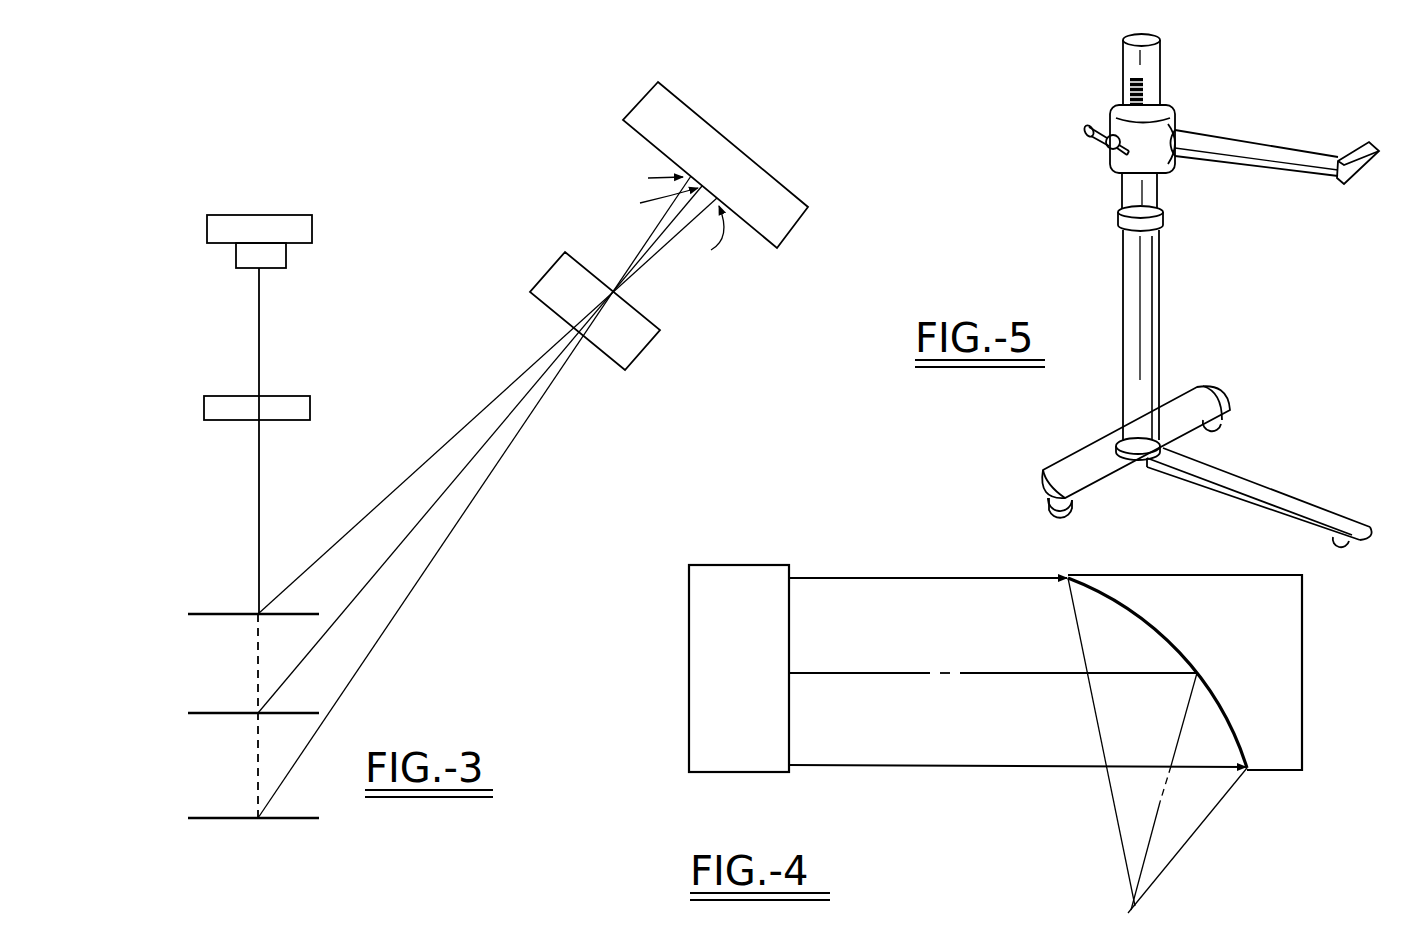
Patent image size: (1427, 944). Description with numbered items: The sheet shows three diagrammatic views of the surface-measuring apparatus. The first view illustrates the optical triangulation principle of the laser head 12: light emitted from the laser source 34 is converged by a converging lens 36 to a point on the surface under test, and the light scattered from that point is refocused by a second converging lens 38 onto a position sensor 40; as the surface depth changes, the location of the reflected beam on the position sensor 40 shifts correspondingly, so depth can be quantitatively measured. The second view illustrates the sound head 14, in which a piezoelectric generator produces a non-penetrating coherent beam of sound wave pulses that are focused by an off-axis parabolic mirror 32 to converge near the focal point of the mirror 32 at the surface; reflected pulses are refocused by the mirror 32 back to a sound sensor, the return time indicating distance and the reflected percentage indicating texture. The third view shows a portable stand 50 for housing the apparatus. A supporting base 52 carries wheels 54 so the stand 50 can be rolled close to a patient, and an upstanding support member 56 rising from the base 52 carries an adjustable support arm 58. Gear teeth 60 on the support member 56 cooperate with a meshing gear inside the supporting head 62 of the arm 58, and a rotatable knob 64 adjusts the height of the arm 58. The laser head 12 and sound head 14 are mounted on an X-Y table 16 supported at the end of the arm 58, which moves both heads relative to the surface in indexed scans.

In FIG. 3, the laser head 12 is at (404, 163).
In FIG. 3, the laser source 34 is at (312, 229).
In FIG. 3, the converging lens 36 is at (310, 401).
In FIG. 3, the converging lens 38 is at (546, 276).
In FIG. 3, the position sensor 40 is at (724, 134).
In FIG. 4, the sound head 14 is at (746, 695).
In FIG. 4, the off-axis parabolic mirror 32 is at (1171, 646).
In FIG. 5, the portable stand 50 is at (1058, 102).
In FIG. 5, the supporting base 52 is at (1214, 384).
In FIG. 5, the wheels 54 is at (1071, 510).
In FIG. 5, the upstanding support member 56 is at (1152, 276).
In FIG. 5, the adjustable support arm 58 is at (1245, 140).
In FIG. 5, the gear teeth 60 is at (1145, 93).
In FIG. 5, the supporting head 62 is at (1150, 160).
In FIG. 5, the rotatable knob 64 is at (1107, 149).
In FIG. 5, the X-Y table 16 is at (1366, 170).